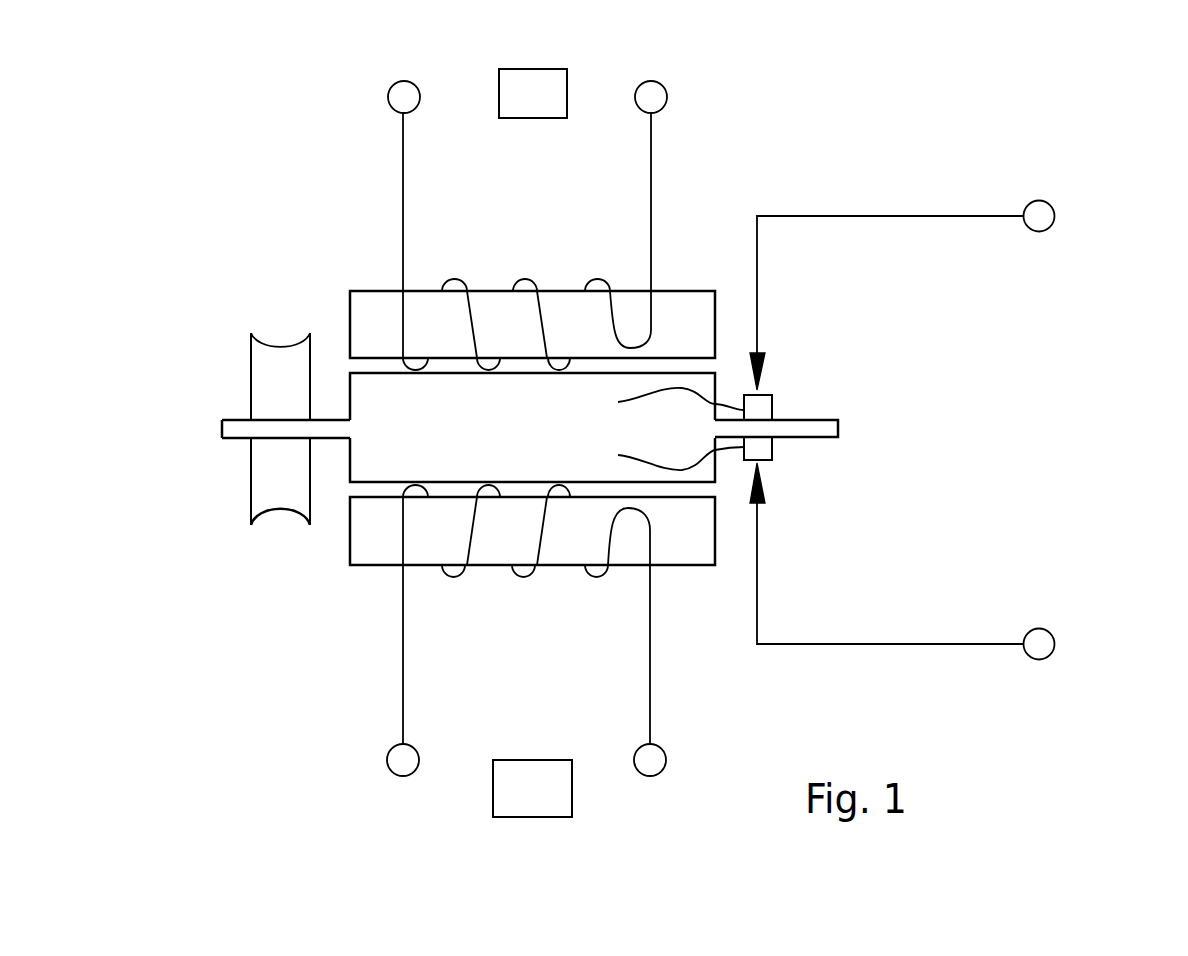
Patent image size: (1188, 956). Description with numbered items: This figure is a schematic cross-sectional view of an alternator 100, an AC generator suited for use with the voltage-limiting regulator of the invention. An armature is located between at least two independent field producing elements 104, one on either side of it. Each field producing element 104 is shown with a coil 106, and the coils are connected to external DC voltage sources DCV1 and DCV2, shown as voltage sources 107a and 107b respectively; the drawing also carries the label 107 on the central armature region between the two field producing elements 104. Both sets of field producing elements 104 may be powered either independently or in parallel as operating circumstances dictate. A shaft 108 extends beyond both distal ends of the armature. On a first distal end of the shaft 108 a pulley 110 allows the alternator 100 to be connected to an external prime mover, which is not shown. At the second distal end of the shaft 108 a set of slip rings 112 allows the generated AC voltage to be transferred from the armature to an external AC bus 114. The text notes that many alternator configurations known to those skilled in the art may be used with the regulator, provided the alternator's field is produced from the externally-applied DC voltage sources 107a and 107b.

The alternator 100 is at (745, 158).
The field producing element 104 is at (535, 286).
The coil 106 is at (456, 285).
The magnetostrictive member 107 is at (522, 437).
The external voltage source DCV1 107a is at (527, 69).
The external voltage source DCV2 107b is at (527, 760).
The shaft 108 is at (800, 427).
The pulley 110 is at (280, 348).
The slip rings 112 is at (758, 448).
The external AC bus 114 is at (1036, 217).